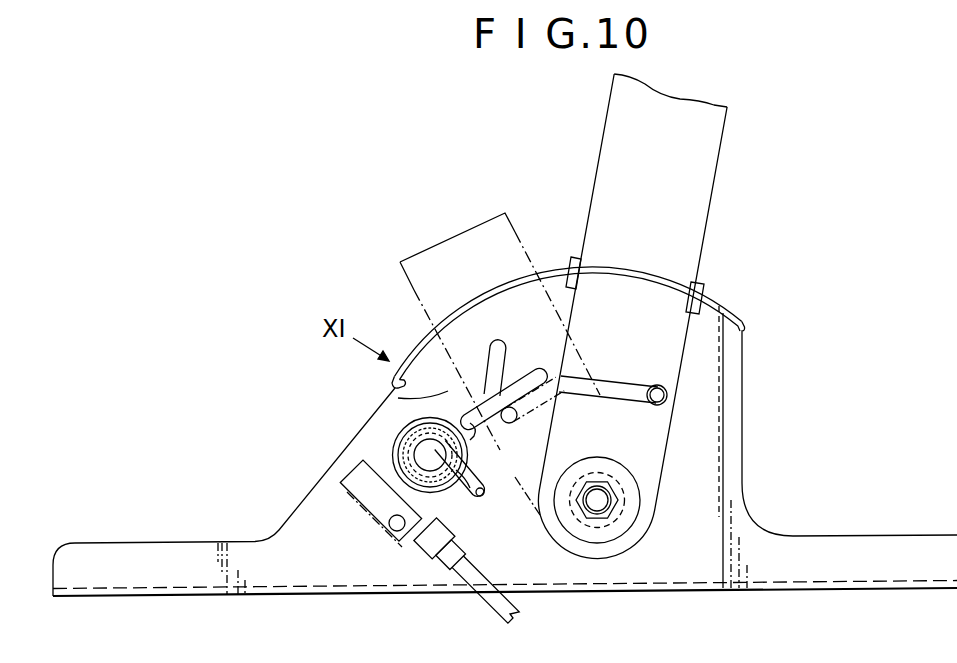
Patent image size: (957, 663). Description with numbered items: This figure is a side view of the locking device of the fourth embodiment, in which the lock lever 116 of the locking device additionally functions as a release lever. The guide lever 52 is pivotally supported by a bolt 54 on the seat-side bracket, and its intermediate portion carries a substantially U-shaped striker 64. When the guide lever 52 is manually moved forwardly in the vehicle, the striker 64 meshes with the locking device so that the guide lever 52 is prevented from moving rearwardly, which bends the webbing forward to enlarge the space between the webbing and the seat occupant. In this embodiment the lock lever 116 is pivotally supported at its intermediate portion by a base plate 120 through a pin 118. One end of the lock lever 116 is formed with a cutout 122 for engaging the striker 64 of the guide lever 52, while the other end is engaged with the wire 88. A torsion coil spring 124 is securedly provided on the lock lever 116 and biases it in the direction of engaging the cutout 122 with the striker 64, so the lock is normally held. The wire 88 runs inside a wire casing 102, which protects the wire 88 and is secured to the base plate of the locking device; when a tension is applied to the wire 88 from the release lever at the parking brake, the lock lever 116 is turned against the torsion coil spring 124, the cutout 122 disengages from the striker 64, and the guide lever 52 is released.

The guide lever 52 is at (705, 178).
The bolt 54 is at (600, 499).
The striker 64 is at (620, 382).
The wire 88 is at (406, 550).
The wire casing 102 is at (473, 571).
The lock lever 116 is at (400, 398).
The pin 118 is at (452, 496).
The base plate 120 is at (732, 399).
The cutout 122 is at (517, 333).
The torsion coil spring 124 is at (473, 487).